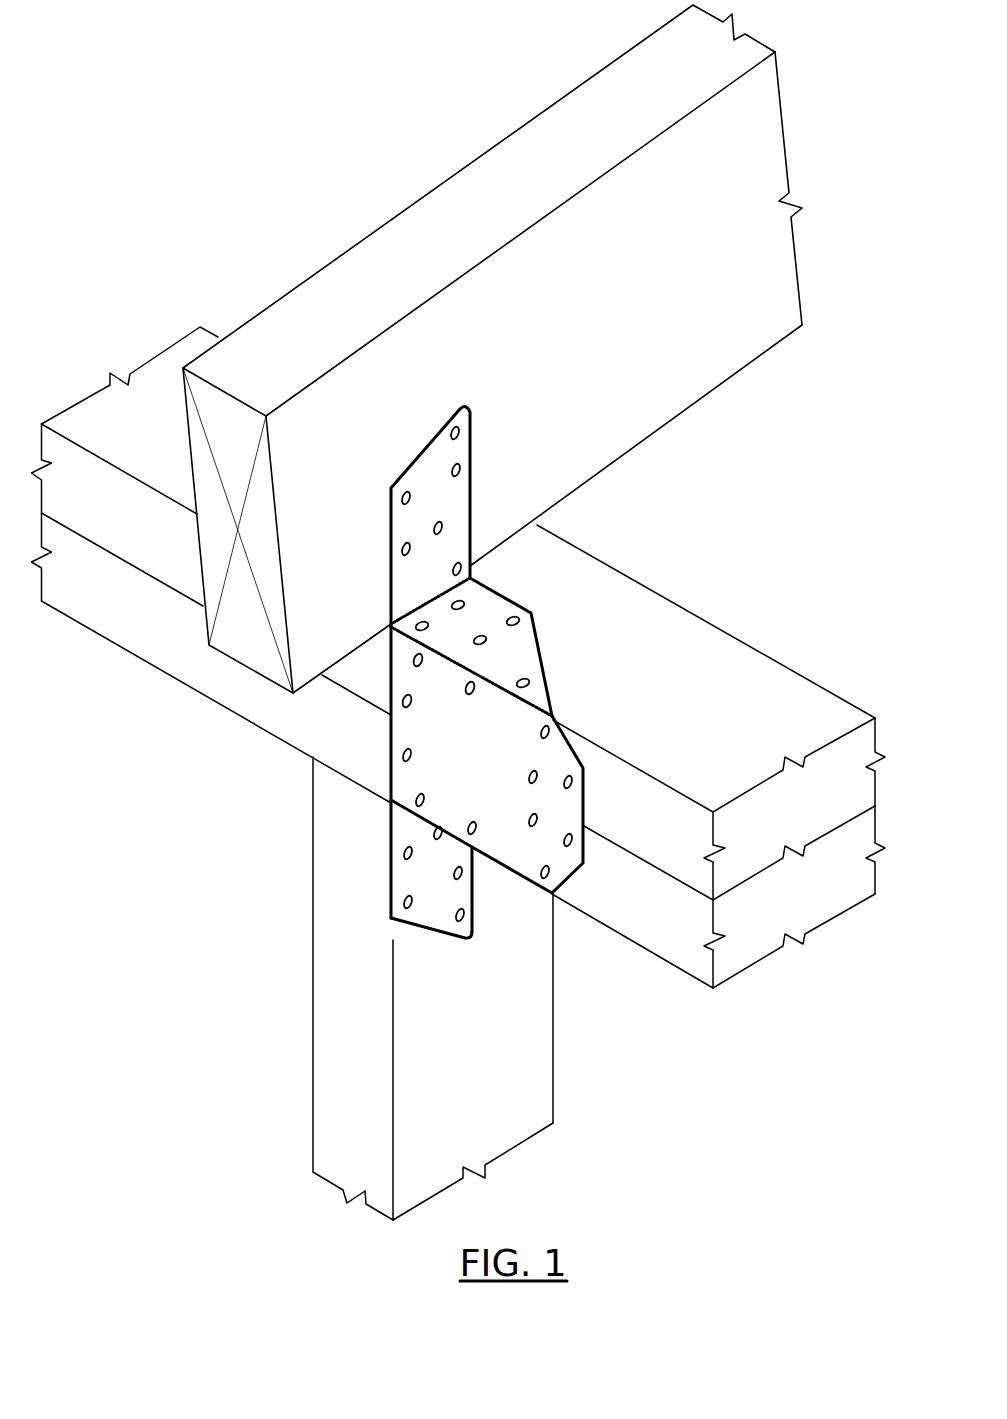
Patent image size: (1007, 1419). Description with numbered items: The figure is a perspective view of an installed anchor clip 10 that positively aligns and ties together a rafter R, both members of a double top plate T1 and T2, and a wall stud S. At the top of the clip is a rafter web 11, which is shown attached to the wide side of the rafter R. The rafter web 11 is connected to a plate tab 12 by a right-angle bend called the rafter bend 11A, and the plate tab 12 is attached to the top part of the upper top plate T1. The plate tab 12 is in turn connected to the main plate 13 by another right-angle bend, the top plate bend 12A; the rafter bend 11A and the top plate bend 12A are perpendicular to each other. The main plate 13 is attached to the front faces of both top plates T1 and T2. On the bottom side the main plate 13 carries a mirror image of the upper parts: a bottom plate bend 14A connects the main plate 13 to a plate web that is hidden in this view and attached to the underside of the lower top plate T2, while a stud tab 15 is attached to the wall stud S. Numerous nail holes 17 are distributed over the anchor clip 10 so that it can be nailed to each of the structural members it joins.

The rafter R is at (467, 290).
The top plate T1 is at (476, 613).
The top plate T2 is at (459, 763).
The wall stud S is at (459, 988).
The anchor clip 10 is at (503, 718).
The rafter web 11 is at (445, 492).
The rafter bend 11A is at (490, 591).
The plate tab 12 is at (576, 646).
The top plate bend 12A is at (432, 650).
The main plate 13 is at (525, 810).
The bottom plate bend 14A is at (413, 805).
The stud tab 15 is at (506, 962).
The nail holes 17 is at (408, 900).